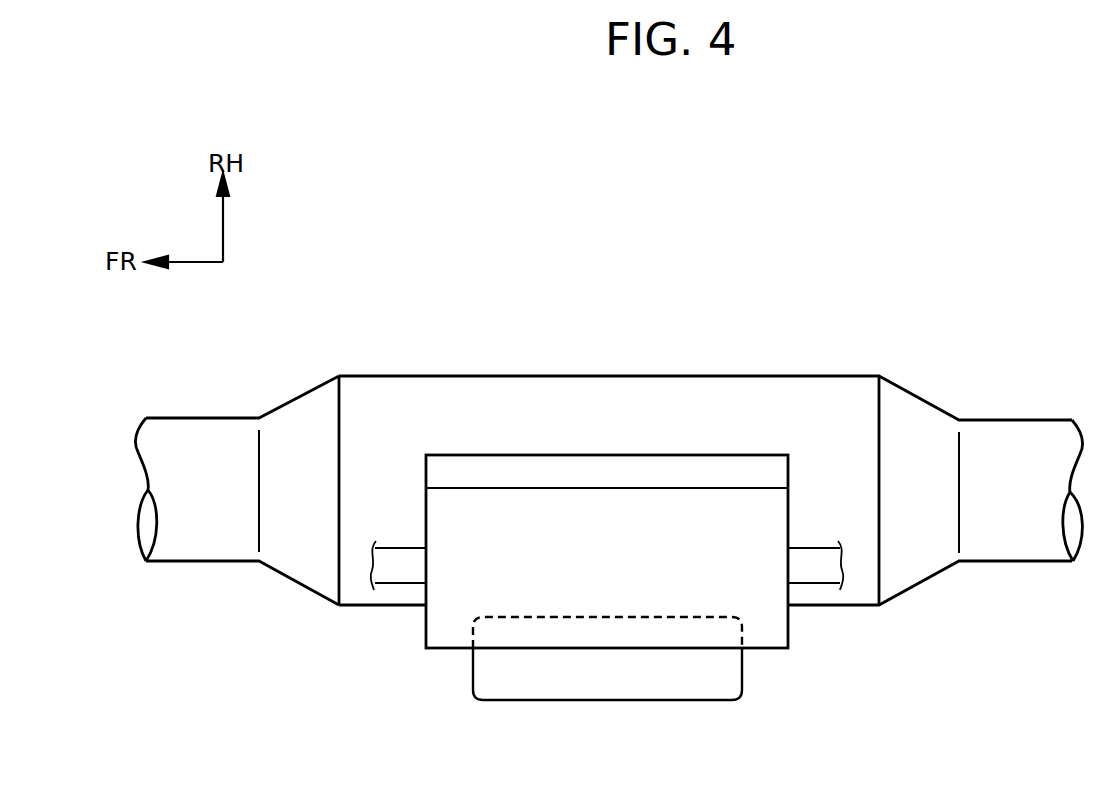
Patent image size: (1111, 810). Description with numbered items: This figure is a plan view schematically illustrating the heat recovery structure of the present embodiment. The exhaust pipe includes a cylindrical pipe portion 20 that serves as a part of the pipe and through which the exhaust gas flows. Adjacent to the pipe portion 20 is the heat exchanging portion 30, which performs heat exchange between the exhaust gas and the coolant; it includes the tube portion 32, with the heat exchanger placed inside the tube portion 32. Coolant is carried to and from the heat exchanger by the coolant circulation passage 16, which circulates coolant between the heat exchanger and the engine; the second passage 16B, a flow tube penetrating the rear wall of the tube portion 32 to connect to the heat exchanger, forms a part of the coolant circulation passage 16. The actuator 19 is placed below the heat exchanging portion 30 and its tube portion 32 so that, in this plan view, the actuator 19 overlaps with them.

The pipe portion 20 is at (459, 377).
The coolant circulation passage 16 is at (393, 558).
The second passage 16B is at (823, 557).
The heat exchanging portion 30 is at (721, 455).
The tube portion 32 is at (627, 467).
The actuator 19 is at (608, 690).